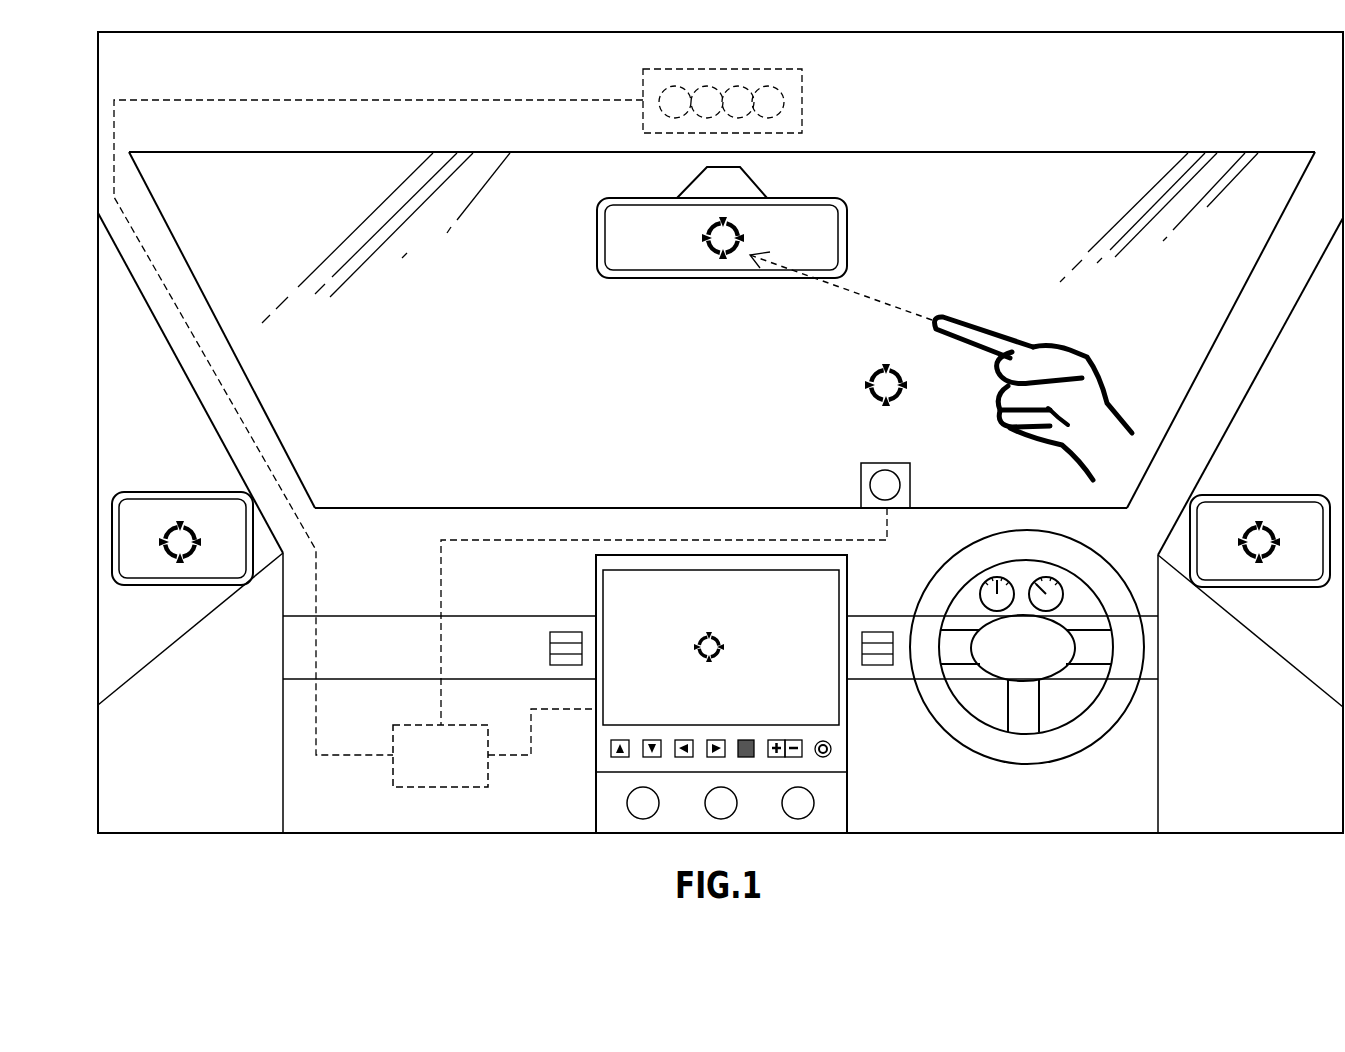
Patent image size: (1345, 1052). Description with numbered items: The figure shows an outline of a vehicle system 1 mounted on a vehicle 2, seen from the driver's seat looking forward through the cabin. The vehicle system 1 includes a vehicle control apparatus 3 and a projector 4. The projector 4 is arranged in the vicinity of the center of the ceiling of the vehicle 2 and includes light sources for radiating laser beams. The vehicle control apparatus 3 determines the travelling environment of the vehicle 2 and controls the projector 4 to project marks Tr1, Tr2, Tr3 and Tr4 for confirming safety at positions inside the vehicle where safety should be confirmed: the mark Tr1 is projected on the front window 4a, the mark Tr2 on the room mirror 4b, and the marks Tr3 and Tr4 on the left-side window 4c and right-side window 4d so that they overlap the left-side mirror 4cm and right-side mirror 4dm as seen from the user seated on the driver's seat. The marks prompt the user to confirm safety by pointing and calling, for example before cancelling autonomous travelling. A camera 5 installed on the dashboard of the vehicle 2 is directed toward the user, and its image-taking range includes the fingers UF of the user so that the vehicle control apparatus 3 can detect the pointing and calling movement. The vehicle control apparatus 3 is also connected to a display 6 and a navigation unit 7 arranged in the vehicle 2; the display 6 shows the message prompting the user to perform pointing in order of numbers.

The vehicle system 1 is at (520, 437).
The vehicle 2 is at (1263, 124).
The vehicle control apparatus 3 is at (488, 777).
The projector 4 is at (802, 93).
The front window 4a is at (697, 424).
The room mirror 4b is at (627, 237).
The left-side window 4c is at (180, 401).
The right-side window 4d is at (1300, 415).
The left-side mirror 4cm is at (163, 562).
The right-side mirror 4dm is at (1273, 570).
The camera 5 is at (861, 465).
The display 6 is at (596, 600).
The navigation unit 7 is at (651, 556).
The mark Tr1 is at (868, 370).
The mark Tr2 is at (715, 257).
The mark Tr3 is at (180, 520).
The mark Tr4 is at (1267, 523).
The fingers UF is at (1077, 370).